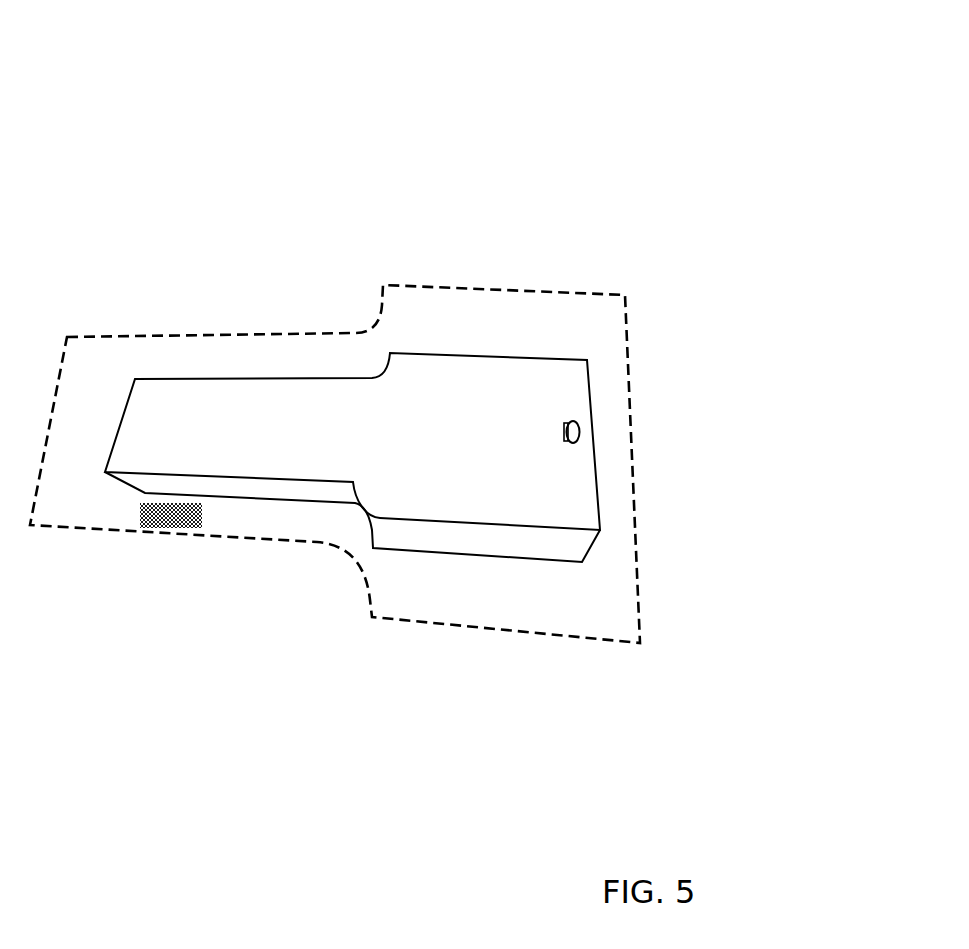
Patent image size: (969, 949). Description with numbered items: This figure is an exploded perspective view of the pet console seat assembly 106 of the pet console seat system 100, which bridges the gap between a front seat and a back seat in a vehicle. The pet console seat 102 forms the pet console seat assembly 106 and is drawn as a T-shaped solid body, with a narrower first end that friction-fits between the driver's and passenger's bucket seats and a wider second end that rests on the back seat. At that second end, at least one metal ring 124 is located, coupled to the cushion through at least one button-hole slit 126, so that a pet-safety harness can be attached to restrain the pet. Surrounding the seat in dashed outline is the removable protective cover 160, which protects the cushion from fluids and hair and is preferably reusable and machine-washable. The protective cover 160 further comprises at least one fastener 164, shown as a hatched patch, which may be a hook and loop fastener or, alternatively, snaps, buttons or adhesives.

The pet console seat system 100 is at (365, 346).
The pet console seat 102 is at (402, 297).
The pet console seat assembly 106 is at (555, 195).
The metal ring 124 is at (567, 423).
The button-hole slit 126 is at (583, 435).
The protective cover 160 is at (315, 549).
The fastener 164 is at (147, 527).